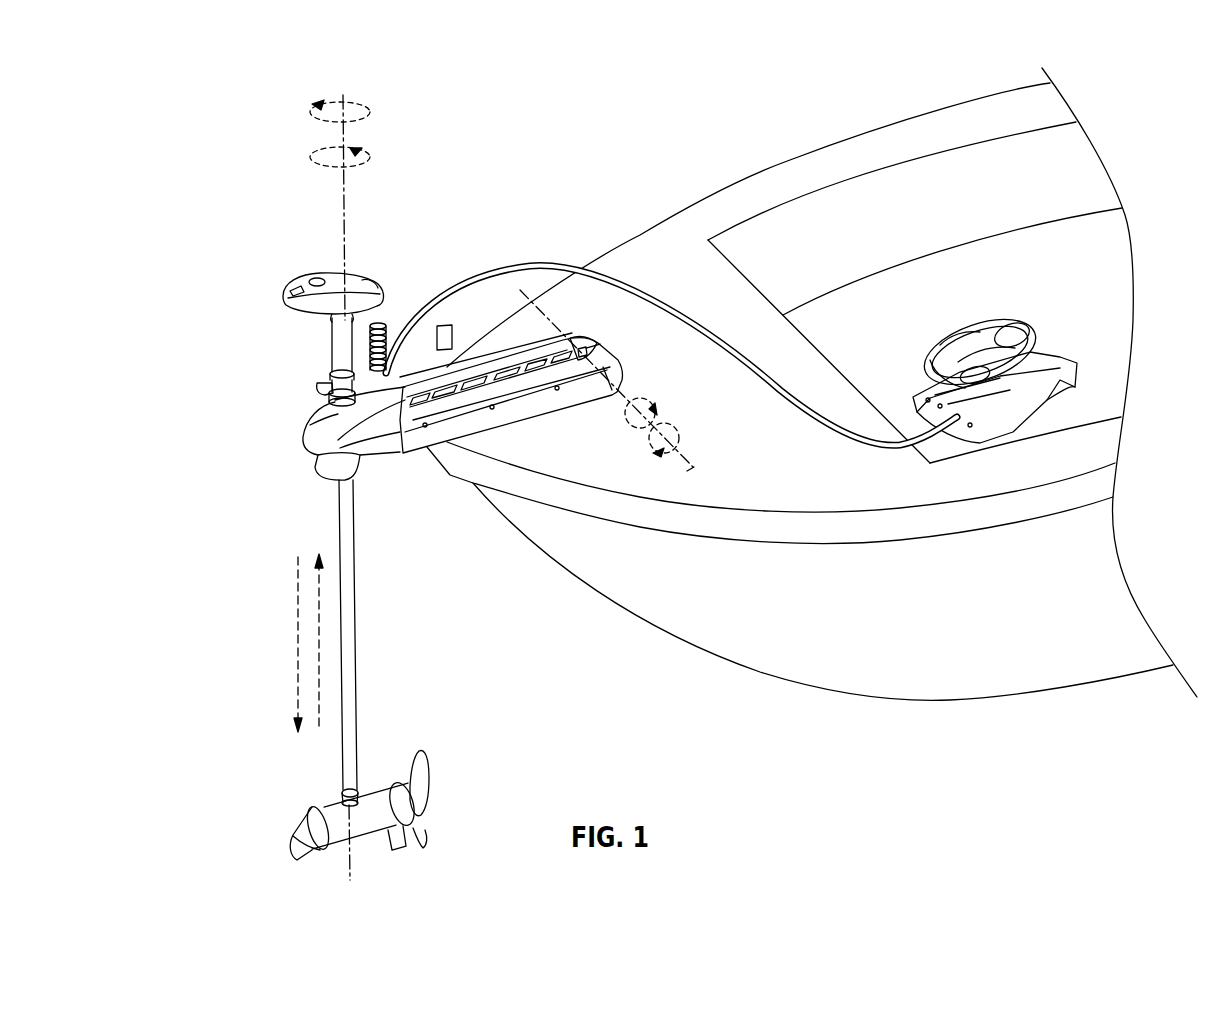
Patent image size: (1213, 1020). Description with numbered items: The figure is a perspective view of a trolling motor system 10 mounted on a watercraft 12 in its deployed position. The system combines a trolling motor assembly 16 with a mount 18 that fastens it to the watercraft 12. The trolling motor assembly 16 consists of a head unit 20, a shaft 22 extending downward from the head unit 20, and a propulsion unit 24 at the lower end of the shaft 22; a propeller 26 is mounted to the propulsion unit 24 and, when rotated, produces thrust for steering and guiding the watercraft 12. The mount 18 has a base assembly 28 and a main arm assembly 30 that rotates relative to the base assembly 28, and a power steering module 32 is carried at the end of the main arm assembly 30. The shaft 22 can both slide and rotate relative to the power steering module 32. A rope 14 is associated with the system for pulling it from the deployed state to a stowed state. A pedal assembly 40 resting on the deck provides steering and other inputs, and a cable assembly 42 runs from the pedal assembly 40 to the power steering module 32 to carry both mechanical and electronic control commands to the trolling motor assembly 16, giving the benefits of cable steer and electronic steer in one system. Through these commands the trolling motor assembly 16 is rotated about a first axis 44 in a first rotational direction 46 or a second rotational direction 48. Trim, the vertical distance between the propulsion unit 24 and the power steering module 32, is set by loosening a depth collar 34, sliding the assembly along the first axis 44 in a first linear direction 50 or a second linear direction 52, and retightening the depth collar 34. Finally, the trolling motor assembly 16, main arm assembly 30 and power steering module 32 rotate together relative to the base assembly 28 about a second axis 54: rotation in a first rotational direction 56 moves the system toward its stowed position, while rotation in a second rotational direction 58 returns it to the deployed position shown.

The trolling motor system 10 is at (453, 469).
The watercraft 12 is at (978, 680).
The rope 14 is at (422, 357).
The trolling motor assembly 16 is at (296, 469).
The mount 18 is at (576, 390).
The head unit 20 is at (305, 282).
The shaft 22 is at (319, 635).
The propulsion unit 24 is at (390, 771).
The propeller 26 is at (424, 784).
The base assembly 28 is at (535, 406).
The main arm assembly 30 is at (567, 340).
The power steering module 32 is at (304, 465).
The depth collar 34 is at (318, 387).
The pedal assembly 40 is at (1080, 343).
The cable assembly 42 is at (487, 280).
The first axis 44 is at (340, 205).
The first rotational direction 46 is at (322, 150).
The second rotational direction 48 is at (316, 104).
The first linear direction 50 is at (298, 612).
The second linear direction 52 is at (319, 720).
The second axis 54 is at (690, 467).
The first rotational direction 56 is at (653, 402).
The second rotational direction 58 is at (678, 428).